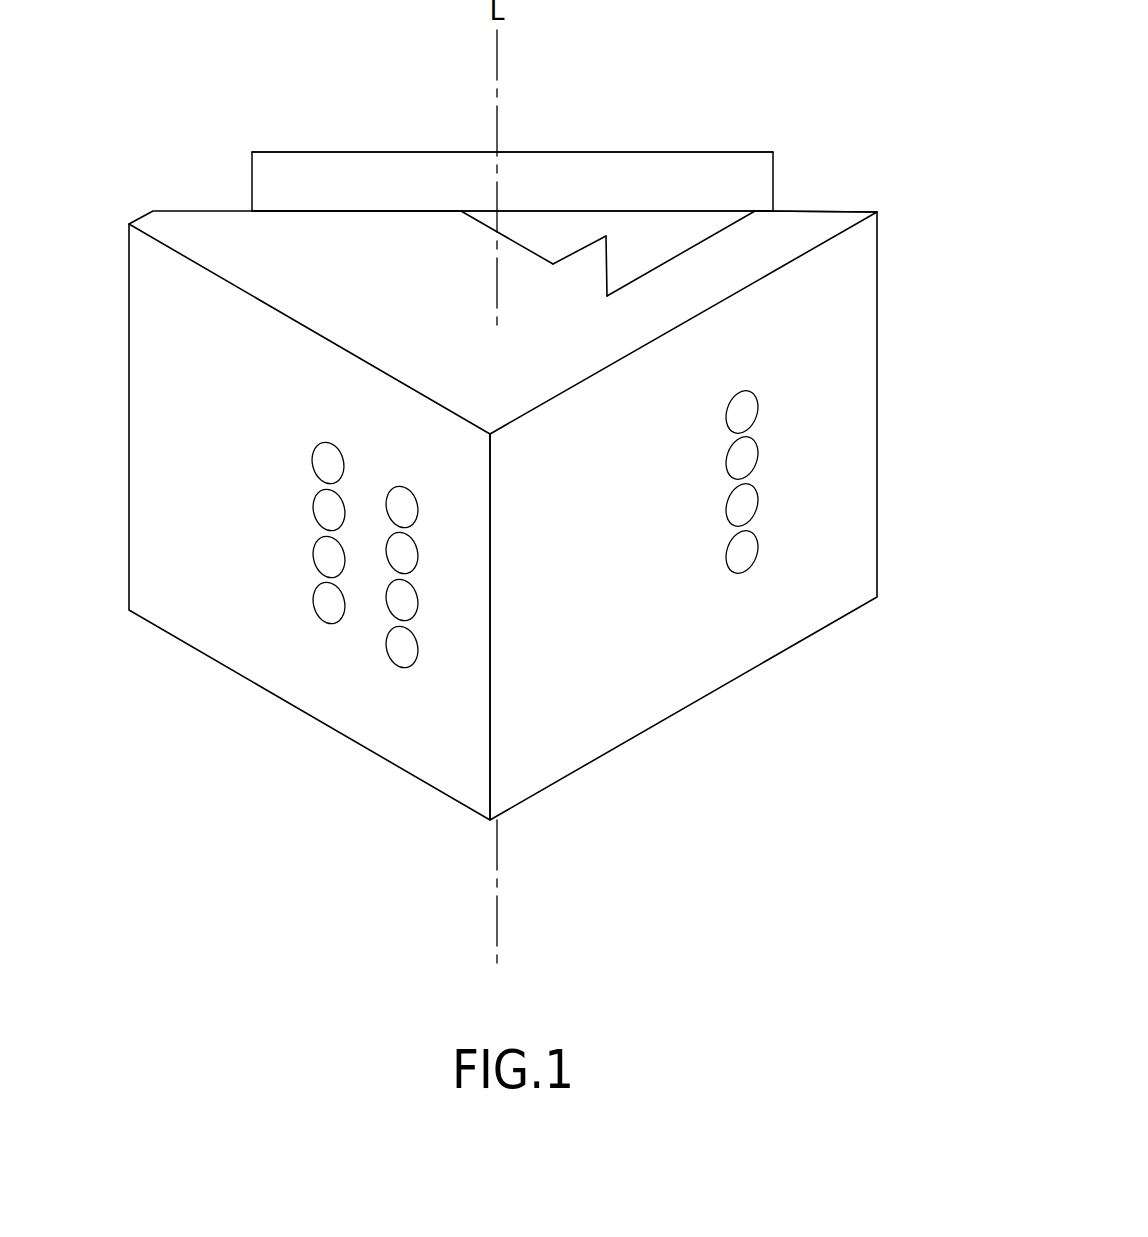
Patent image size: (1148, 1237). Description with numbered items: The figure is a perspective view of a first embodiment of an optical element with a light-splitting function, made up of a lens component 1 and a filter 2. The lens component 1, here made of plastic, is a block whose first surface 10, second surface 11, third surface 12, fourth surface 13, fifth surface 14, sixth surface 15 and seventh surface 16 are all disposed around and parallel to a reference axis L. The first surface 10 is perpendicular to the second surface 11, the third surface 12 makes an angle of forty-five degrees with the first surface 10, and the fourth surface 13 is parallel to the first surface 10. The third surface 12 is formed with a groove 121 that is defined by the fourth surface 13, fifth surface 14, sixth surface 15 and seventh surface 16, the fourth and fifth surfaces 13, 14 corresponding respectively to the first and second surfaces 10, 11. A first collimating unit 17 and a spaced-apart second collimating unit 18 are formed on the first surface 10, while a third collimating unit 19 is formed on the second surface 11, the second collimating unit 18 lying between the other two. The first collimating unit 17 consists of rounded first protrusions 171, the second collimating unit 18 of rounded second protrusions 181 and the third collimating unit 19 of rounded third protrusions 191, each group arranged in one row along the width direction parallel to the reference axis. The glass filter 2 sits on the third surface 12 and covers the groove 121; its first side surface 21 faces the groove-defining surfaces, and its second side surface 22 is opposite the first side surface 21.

The lens component 1 is at (504, 472).
The filter 2 is at (512, 121).
The first surface 10 is at (182, 610).
The second surface 11 is at (610, 703).
The third surface 12 is at (828, 212).
The groove 121 is at (662, 256).
The fourth surface 13 is at (515, 240).
The fifth surface 14 is at (717, 230).
The sixth surface 15 is at (578, 247).
The seventh surface 16 is at (608, 273).
The first collimating unit 17 is at (267, 621).
The first protrusions 171 is at (327, 613).
The second collimating unit 18 is at (411, 672).
The second protrusions 181 is at (398, 652).
The third collimating unit 19 is at (782, 571).
The third protrusions 191 is at (716, 486).
The first side surface 21 is at (663, 212).
The second side surface 22 is at (430, 152).